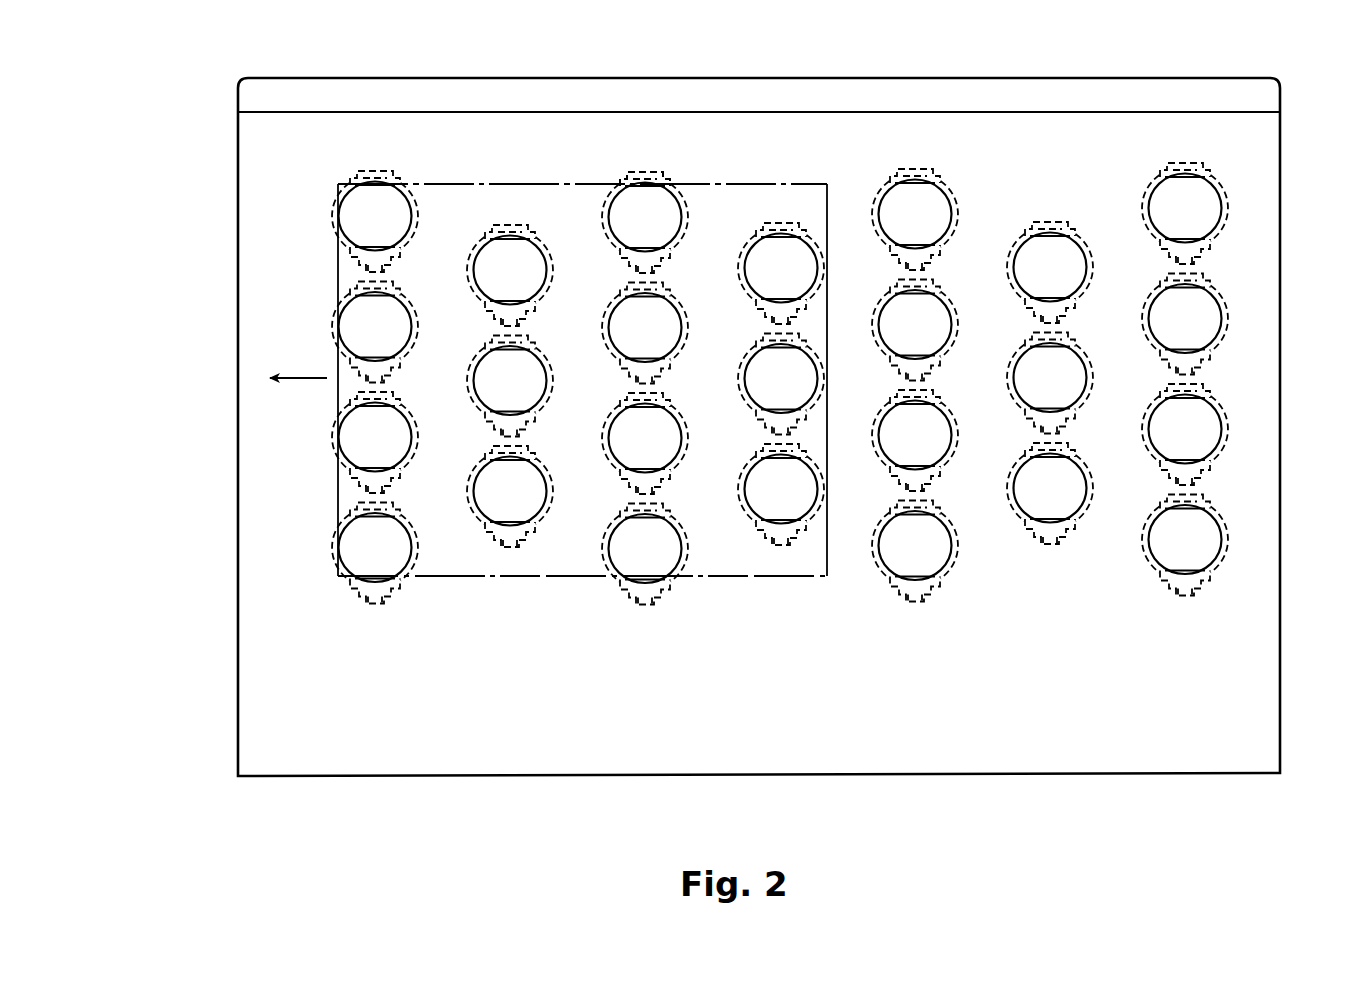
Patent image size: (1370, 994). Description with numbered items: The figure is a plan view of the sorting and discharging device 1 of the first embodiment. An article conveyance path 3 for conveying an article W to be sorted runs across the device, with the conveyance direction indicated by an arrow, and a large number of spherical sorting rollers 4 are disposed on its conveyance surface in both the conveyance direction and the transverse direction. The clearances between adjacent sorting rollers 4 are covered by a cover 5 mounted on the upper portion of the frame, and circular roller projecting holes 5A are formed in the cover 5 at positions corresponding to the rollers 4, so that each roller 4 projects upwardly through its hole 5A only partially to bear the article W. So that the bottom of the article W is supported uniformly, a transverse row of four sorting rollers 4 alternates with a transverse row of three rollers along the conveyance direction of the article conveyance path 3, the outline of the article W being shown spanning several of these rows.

The sorting and discharging device 1 is at (343, 783).
The article conveyance path 3 is at (302, 410).
The spherical sorting roller 4 is at (672, 217).
The cover 5 is at (723, 132).
The roller projecting hole 5A is at (643, 181).
The article W is at (516, 578).